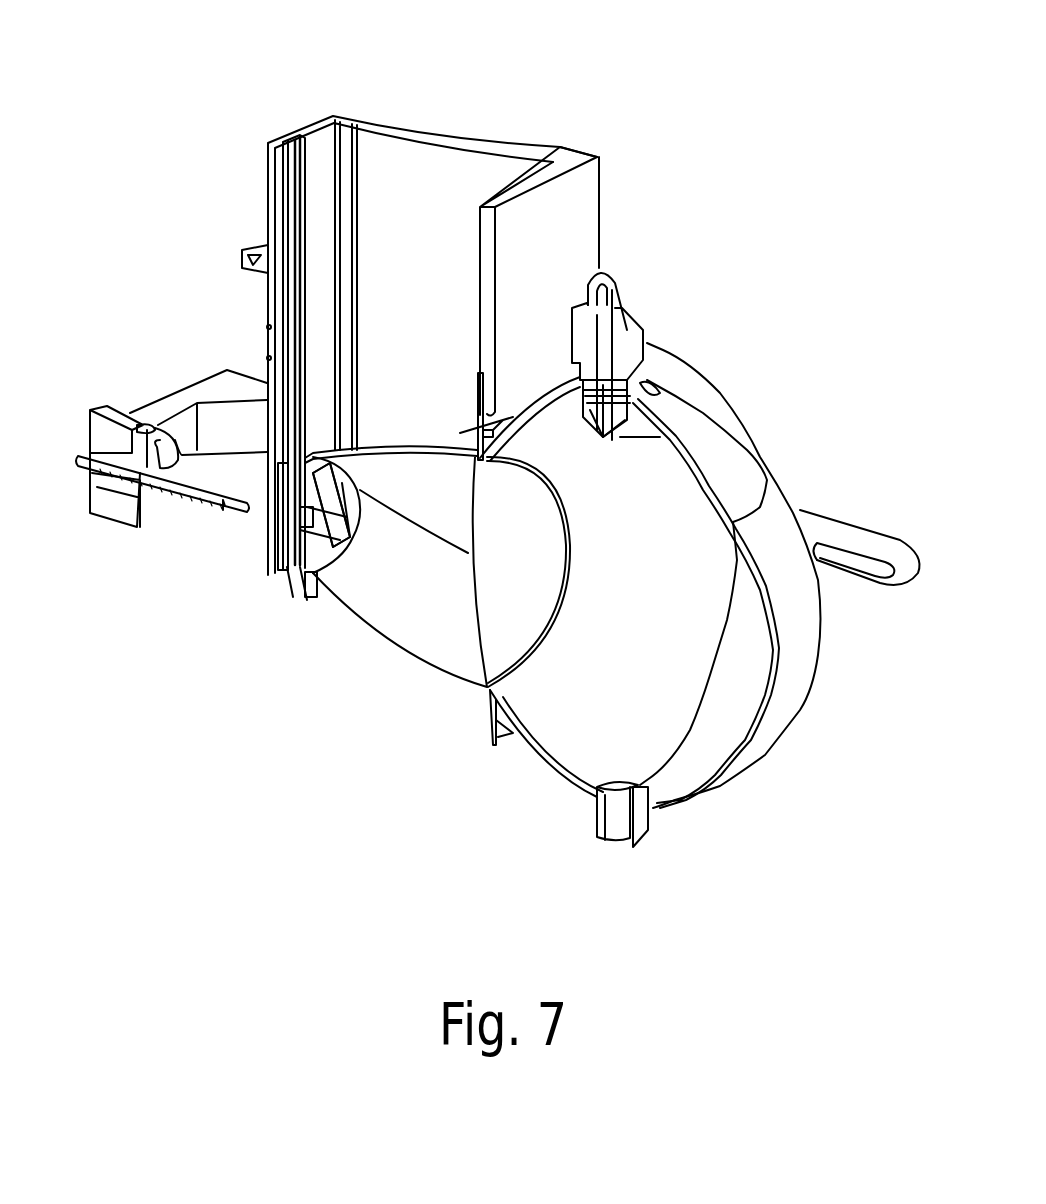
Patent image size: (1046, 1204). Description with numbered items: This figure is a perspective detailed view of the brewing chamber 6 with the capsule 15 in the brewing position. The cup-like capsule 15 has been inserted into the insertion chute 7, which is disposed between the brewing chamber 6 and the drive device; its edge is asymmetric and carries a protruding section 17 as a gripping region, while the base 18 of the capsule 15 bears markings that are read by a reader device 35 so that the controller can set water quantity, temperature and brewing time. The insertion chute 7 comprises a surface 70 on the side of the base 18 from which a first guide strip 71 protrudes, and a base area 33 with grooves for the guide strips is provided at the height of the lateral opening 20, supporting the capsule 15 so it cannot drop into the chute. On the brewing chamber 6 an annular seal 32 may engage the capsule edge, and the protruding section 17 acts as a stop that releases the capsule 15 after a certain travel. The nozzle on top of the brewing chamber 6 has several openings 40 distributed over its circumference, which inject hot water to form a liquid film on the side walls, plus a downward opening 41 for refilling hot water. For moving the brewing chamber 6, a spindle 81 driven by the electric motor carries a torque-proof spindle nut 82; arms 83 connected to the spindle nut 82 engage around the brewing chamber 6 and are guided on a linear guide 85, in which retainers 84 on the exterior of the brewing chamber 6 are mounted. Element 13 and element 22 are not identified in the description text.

The brewing chamber 6 is at (767, 547).
The insertion chute 7 is at (387, 160).
The latching clip 13 is at (602, 307).
The capsule 15 is at (397, 665).
The protruding section 17 is at (480, 405).
The base 18 is at (310, 565).
The lateral opening 20 is at (500, 588).
The drain tube 22 is at (610, 817).
The annular seal 32 is at (493, 690).
The base area 33 is at (287, 580).
The reader device 35 is at (273, 545).
The openings 40 is at (597, 397).
The opening 41 is at (607, 437).
The surface 70 is at (317, 143).
The first guide strip 71 is at (300, 190).
The spindle 81 is at (192, 492).
The spindle nut 82 is at (113, 450).
The arms 83 is at (220, 428).
The retainers 84 is at (820, 553).
The linear guide 85 is at (857, 540).